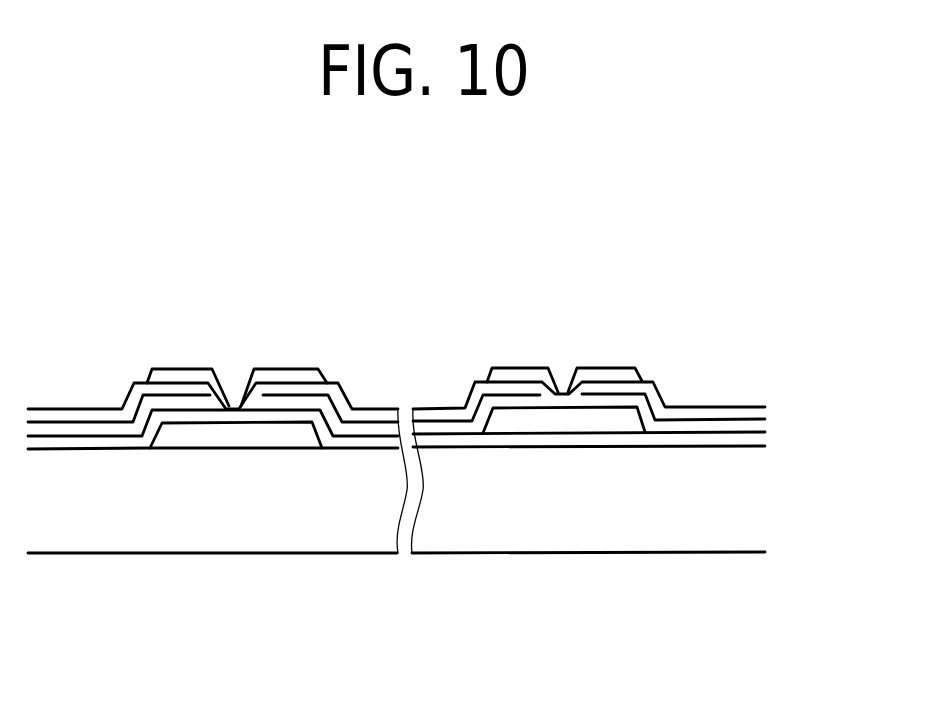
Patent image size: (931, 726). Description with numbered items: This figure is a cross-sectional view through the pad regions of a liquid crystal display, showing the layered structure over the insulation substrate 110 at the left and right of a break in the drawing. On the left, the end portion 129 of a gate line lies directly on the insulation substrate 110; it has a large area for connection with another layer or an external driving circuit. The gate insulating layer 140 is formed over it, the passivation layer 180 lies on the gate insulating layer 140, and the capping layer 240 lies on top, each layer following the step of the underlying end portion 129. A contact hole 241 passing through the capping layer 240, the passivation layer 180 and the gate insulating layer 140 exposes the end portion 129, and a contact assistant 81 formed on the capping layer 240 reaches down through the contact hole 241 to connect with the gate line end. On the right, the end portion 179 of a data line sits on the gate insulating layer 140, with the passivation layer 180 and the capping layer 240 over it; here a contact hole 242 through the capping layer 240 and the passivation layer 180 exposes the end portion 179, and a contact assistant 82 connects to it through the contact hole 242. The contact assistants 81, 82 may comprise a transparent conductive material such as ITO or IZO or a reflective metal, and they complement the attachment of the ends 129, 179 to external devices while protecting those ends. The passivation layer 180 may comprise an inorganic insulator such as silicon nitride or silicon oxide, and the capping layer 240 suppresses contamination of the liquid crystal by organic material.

The insulation substrate 110 is at (262, 527).
The end portion of gate line 129 is at (195, 433).
The gate insulating layer 140 is at (348, 440).
The end portion of data line 179 is at (558, 420).
The passivation layer 180 is at (148, 416).
The capping layer 240 is at (113, 417).
The contact assistant 81 is at (167, 377).
The contact assistant 82 is at (500, 367).
The contact hole 241 is at (217, 403).
The contact hole 242 is at (559, 378).